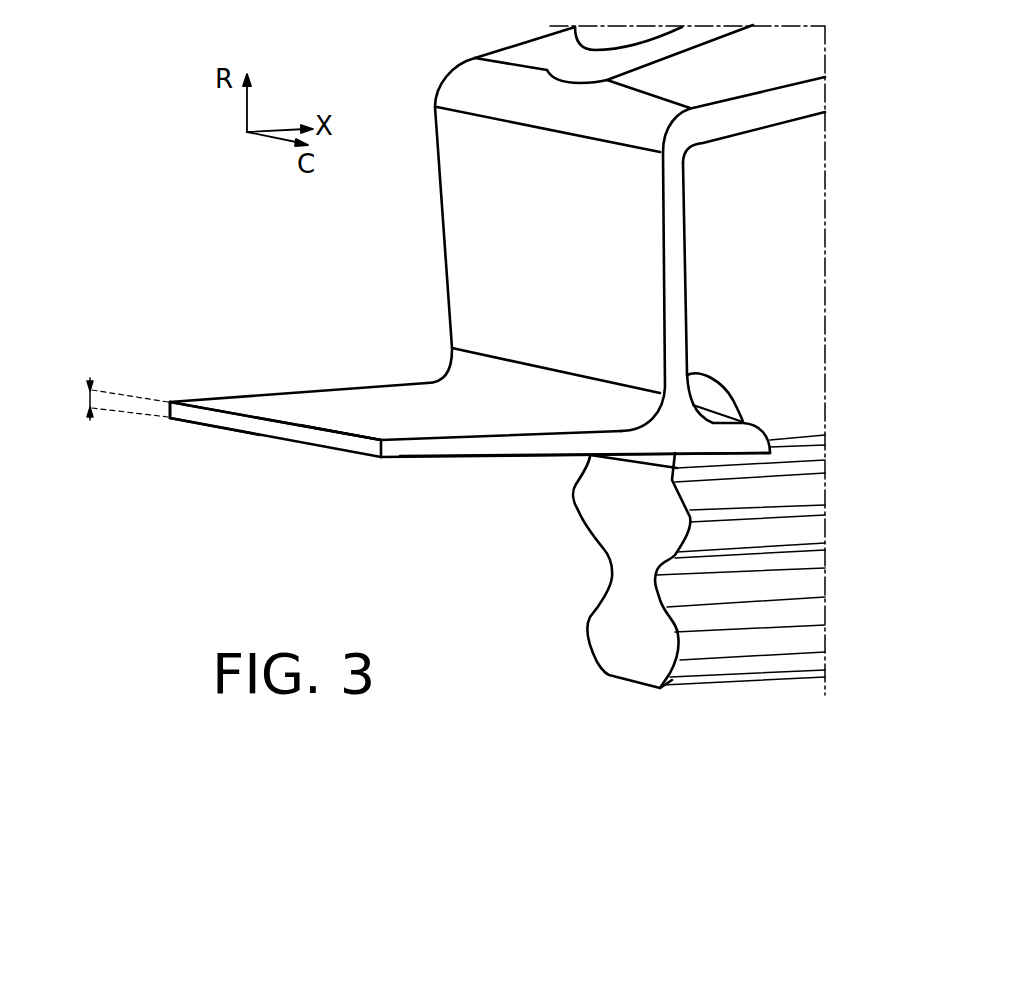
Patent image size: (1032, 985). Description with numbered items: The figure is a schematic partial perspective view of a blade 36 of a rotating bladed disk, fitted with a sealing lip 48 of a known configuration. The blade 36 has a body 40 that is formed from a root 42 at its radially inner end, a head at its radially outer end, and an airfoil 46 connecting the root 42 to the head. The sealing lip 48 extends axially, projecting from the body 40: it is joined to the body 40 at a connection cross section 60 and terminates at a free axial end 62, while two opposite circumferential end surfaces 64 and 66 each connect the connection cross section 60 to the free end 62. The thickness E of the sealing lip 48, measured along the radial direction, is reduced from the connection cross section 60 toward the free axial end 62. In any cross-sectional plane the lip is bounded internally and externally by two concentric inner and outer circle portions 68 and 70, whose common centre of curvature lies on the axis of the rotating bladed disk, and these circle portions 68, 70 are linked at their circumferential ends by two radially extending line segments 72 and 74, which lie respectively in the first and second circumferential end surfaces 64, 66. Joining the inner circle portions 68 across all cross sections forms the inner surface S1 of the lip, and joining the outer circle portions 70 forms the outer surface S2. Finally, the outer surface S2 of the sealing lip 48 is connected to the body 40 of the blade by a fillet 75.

The blade 36 is at (247, 258).
The body 40 is at (704, 250).
The root 42 is at (637, 662).
The airfoil 46 is at (620, 33).
The sealing lip 48 is at (194, 421).
The connection cross section 60 is at (453, 390).
The free axial end 62 is at (243, 423).
The first circumferential end surface 64 is at (488, 447).
The second circumferential end surface 66 is at (230, 397).
The inner circle portion 68 is at (338, 445).
The outer circle portion 70 is at (295, 425).
The line segment 72 is at (376, 449).
The line segment 74 is at (168, 410).
The fillet 75 is at (530, 377).
The inner surface S1 is at (528, 457).
The outer surface S2 is at (352, 407).
The thickness E is at (88, 390).